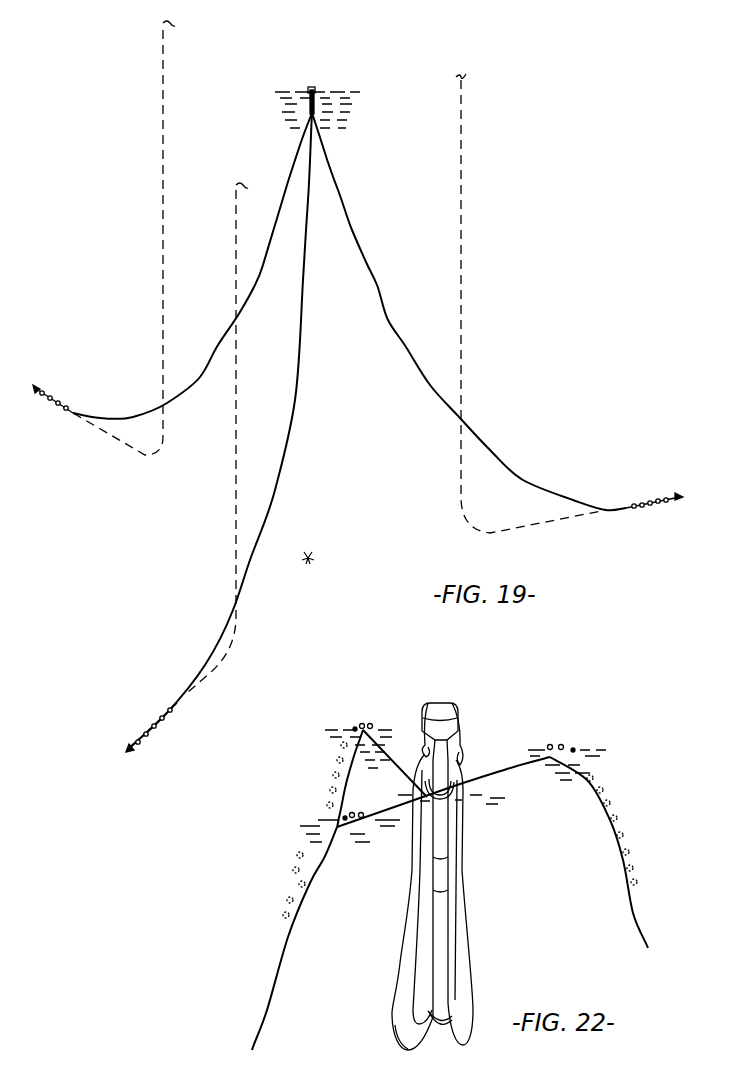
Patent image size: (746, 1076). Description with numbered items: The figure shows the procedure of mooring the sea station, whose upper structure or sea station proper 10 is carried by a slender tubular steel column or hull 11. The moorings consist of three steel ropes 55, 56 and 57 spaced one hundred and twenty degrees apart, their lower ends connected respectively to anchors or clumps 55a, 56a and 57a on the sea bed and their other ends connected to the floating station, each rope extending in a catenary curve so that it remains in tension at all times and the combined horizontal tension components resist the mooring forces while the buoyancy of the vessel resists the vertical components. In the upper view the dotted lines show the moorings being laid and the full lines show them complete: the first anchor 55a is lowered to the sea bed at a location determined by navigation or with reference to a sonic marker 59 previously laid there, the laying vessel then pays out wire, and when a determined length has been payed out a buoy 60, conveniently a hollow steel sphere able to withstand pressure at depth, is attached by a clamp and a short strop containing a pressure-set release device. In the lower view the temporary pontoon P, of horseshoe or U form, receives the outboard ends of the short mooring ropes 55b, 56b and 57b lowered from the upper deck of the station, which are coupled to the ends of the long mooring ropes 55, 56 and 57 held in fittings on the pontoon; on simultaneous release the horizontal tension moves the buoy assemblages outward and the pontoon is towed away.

In FIG. 19, the steel rope 55 is at (273, 493).
In FIG. 22, the steel rope 55 is at (268, 1013).
In FIG. 19, the steel rope 56 is at (190, 387).
In FIG. 22, the steel rope 56 is at (400, 762).
In FIG. 19, the steel rope 57 is at (385, 305).
In FIG. 22, the steel rope 57 is at (633, 915).
In FIG. 19, the anchor or clump 55a is at (129, 753).
In FIG. 19, the anchor or clump 56a is at (33, 389).
In FIG. 19, the anchor or clump 57a is at (676, 493).
In FIG. 22, the short mooring rope 55b is at (395, 1022).
In FIG. 22, the short mooring rope 56b is at (412, 951).
In FIG. 22, the short mooring rope 57b is at (472, 977).
In FIG. 19, the sonic marker 59 is at (309, 559).
In FIG. 19, the buoy 60 is at (174, 25).
In FIG. 22, the buoy 60 is at (362, 724).
In FIG. 22, the upper structure or sea station proper 10 is at (450, 720).
In FIG. 22, the tubular steel column or hull 11 is at (443, 872).
In FIG. 22, the temporary pontoon P is at (463, 798).